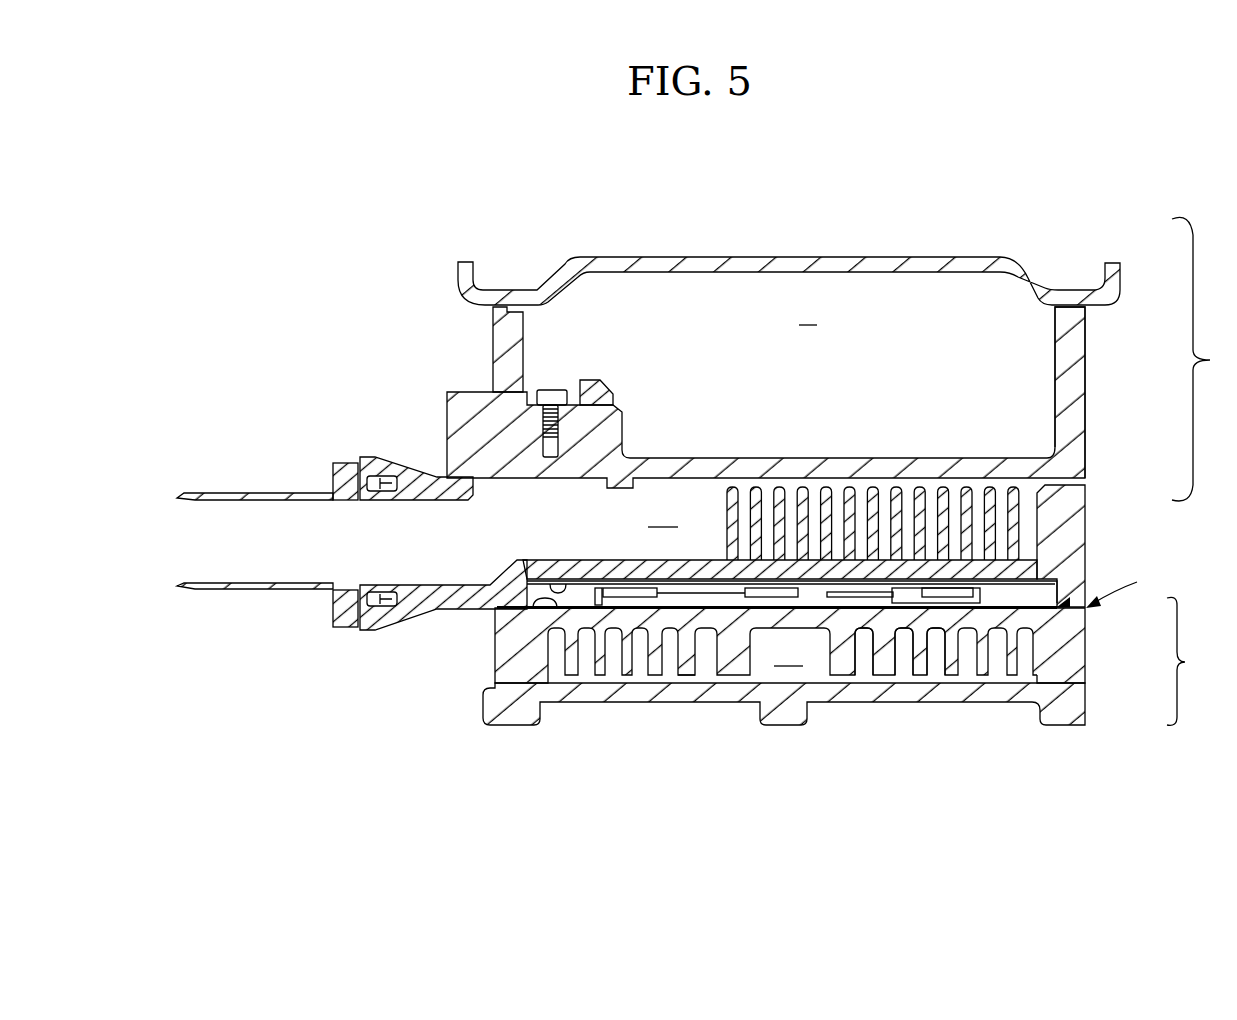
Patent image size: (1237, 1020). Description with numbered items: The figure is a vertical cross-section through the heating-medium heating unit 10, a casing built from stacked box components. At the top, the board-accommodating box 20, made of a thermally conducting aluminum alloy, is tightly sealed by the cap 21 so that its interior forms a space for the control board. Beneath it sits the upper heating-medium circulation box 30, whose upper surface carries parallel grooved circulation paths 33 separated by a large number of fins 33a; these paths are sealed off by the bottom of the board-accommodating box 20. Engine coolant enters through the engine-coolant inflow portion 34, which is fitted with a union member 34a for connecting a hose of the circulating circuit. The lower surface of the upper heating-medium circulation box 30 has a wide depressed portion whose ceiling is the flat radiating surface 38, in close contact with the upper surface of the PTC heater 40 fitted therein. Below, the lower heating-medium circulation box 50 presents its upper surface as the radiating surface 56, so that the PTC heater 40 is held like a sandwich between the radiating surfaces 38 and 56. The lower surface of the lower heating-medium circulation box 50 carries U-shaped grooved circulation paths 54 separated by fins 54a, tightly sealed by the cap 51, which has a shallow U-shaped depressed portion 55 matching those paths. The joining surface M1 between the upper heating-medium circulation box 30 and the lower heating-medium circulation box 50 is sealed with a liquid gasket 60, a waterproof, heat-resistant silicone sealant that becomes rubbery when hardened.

The heating-medium heating unit 10 is at (804, 188).
The board-accommodating box 20 is at (1087, 352).
The cap 21 is at (1020, 263).
The upper heating-medium circulation box 30 is at (1090, 498).
The circulation paths 33 is at (804, 546).
The fins 33a is at (894, 486).
The engine-coolant inflow portion 34 is at (385, 458).
The union member 34a is at (223, 492).
The flat radiating surface 38 is at (556, 582).
The PTC heater 40 is at (1000, 593).
The joining surface M1 is at (1111, 587).
The lower heating-medium circulation box 50 is at (1087, 618).
The cap 51 is at (1087, 702).
The circulation paths 54 is at (792, 651).
The fins 54a is at (955, 672).
The depressed portion 55 is at (676, 676).
The radiating surface 56 is at (533, 605).
The liquid gasket 60 is at (516, 615).